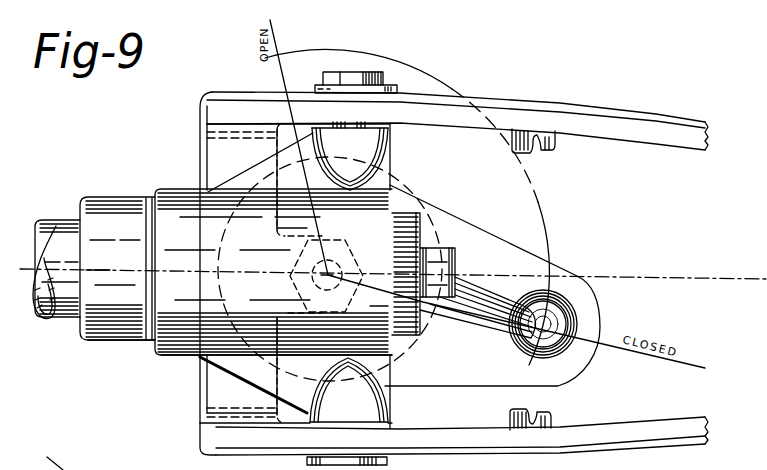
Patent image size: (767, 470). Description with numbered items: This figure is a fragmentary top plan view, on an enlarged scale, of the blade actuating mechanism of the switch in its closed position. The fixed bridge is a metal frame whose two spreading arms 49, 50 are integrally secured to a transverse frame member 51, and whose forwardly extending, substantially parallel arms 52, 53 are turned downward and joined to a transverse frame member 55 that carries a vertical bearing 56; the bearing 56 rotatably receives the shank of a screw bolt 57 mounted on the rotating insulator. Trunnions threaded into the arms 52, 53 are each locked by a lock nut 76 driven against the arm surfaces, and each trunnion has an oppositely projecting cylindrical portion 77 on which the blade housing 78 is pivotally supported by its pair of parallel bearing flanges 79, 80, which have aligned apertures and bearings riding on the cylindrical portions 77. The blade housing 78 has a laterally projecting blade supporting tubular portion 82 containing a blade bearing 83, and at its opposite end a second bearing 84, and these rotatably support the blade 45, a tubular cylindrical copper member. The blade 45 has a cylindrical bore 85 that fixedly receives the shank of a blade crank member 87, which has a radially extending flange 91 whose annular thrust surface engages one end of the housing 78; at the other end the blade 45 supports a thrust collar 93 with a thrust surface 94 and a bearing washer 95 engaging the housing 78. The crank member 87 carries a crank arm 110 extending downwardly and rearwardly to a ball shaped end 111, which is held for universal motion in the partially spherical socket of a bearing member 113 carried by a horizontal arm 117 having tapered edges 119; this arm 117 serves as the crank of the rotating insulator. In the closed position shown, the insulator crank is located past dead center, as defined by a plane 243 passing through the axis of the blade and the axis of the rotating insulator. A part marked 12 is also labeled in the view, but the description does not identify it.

The frame 12 is at (47, 457).
The blade 45 is at (58, 233).
The spreading arm 49 is at (676, 120).
The spreading arm 50 is at (663, 445).
The transverse frame member 51 is at (556, 144).
The forwardly extending arm 52 is at (478, 75).
The forwardly extending arm 53 is at (417, 458).
The transverse frame member 55 is at (207, 147).
The vertical bearing 56 is at (327, 237).
The screw bolt 57 is at (290, 261).
The lock nut 76 is at (341, 78).
The cylindrical portion 77 is at (390, 128).
The blade housing 78 is at (180, 207).
The bearing flange 79 is at (256, 382).
The bearing flange 80 is at (255, 172).
The blade supporting tubular portion 82 is at (174, 356).
The blade bearing 83 is at (101, 343).
The second bearing 84 is at (427, 212).
The cylindrical bore 85 is at (40, 320).
The blade crank member 87 is at (455, 250).
The radially extending flange 91 is at (420, 240).
The thrust collar 93 is at (103, 200).
The thrust surface 94 is at (147, 248).
The bearing washer 95 is at (153, 290).
The crank arm 110 is at (480, 288).
The ball shaped end 111 is at (572, 309).
The bearing member 113 is at (580, 323).
The horizontal arm 117 is at (553, 378).
The tapered edges 119 is at (546, 242).
The plane 243 is at (647, 276).